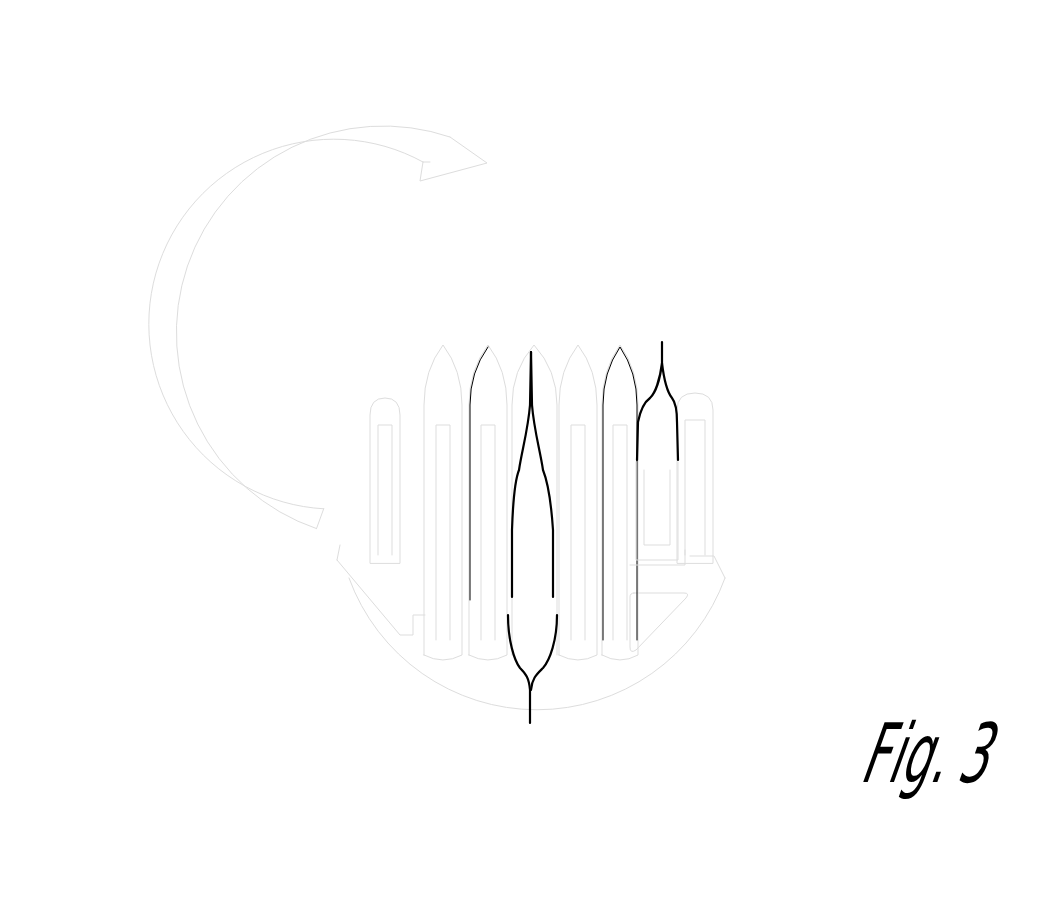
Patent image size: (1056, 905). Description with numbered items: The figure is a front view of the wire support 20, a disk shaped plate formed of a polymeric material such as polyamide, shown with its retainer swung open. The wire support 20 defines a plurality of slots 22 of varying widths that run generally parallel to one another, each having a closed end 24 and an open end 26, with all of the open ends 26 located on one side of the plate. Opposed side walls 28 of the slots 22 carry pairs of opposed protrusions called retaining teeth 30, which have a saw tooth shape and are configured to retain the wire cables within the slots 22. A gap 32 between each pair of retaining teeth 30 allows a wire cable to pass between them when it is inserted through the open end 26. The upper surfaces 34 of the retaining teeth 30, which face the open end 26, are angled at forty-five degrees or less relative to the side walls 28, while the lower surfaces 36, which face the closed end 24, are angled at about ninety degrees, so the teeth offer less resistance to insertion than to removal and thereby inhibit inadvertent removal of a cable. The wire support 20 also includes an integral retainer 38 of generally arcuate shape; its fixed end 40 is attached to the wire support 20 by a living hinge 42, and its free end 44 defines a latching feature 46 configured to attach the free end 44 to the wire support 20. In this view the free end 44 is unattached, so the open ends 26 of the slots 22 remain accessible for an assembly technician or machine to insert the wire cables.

The wire support 20 is at (546, 78).
The slots 22 is at (408, 502).
The closed end 24 is at (408, 408).
The open end 26 is at (405, 572).
The side walls 28 is at (638, 552).
The retaining teeth 30 is at (657, 434).
The gap 32 is at (412, 470).
The upper surfaces 34 is at (534, 487).
The lower surfaces 36 is at (532, 687).
The retainer 38 is at (287, 290).
The fixed end 40 is at (262, 493).
The living hinge 42 is at (312, 515).
The free end 44 is at (453, 153).
The latching feature 46 is at (422, 178).